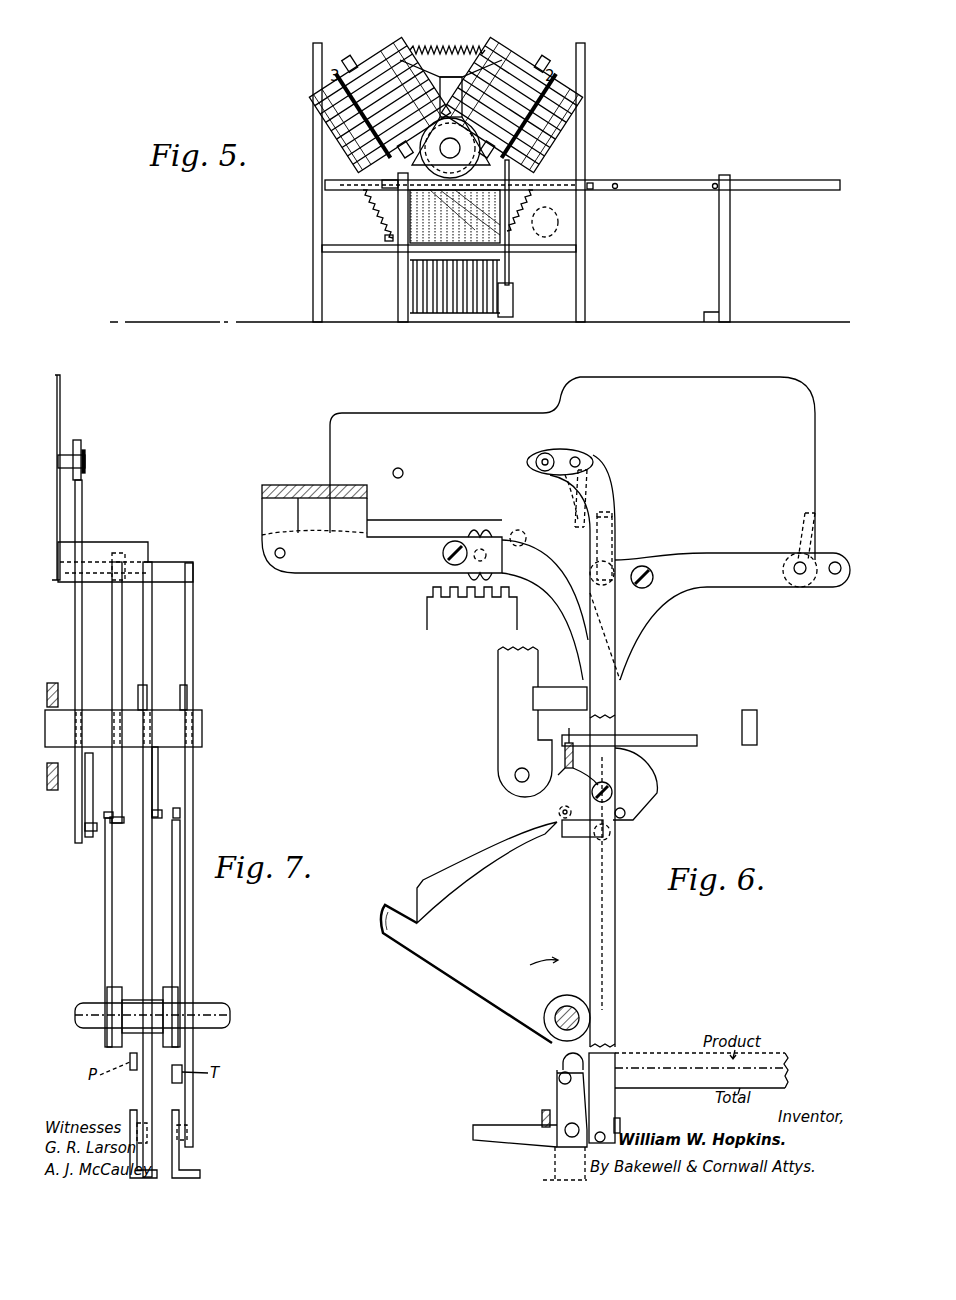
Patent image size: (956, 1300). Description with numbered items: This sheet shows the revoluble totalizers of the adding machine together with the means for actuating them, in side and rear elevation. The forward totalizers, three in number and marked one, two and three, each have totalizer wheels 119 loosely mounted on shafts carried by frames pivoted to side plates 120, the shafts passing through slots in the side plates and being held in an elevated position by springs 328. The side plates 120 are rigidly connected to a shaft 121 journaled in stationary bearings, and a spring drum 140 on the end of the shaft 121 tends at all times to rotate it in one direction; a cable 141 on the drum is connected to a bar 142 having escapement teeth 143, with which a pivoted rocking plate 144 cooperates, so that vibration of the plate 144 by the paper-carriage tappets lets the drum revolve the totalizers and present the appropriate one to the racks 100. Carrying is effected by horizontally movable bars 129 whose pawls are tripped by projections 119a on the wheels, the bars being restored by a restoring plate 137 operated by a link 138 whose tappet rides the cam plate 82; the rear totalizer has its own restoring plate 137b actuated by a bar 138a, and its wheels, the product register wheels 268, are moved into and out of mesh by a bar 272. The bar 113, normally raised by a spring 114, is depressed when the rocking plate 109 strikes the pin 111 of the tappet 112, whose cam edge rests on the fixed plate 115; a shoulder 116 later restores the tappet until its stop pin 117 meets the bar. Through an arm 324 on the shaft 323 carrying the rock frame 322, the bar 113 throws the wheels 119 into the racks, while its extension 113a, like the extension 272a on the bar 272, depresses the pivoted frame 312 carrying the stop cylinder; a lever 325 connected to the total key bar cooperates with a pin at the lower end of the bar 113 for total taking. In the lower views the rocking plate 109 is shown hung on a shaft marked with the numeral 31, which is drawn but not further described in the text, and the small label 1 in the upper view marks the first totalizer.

In FIG. 5, the totalizer 1 is at (545, 222).
In FIG. 7, the shaft 31 is at (232, 1019).
In FIG. 6, the shaft 31 is at (558, 1028).
In FIG. 7, the cam plate 82 is at (105, 931).
In FIG. 6, the cam plate 82 is at (443, 875).
In FIG. 5, the racks 100 is at (412, 307).
In FIG. 7, the rocking plate 109 is at (181, 951).
In FIG. 6, the rocking plate 109 is at (469, 932).
In FIG. 7, the pin 111 is at (181, 813).
In FIG. 6, the pin 111 is at (557, 813).
In FIG. 7, the tappet 112 is at (192, 776).
In FIG. 6, the tappet 112 is at (645, 788).
In FIG. 7, the bar 113 is at (194, 662).
In FIG. 6, the bar 113 is at (612, 605).
In FIG. 7, the extension 113a is at (188, 691).
In FIG. 6, the extension 113a is at (560, 698).
In FIG. 6, the spring 114 is at (565, 748).
In FIG. 6, the plate 115 is at (669, 736).
In FIG. 6, the shoulder 116 is at (555, 838).
In FIG. 6, the stop pin 117 is at (626, 818).
In FIG. 5, the totalizer wheels 119 is at (382, 66).
In FIG. 5, the tripping projections 119a is at (560, 118).
In FIG. 5, the side plates 120 is at (394, 52).
In FIG. 5, the shaft 121 is at (450, 148).
In FIG. 5, the bar 129 is at (455, 97).
In FIG. 6, the restoring plate 137 is at (795, 534).
In FIG. 6, the restoring plate 137b is at (571, 515).
In FIG. 7, the link 138 is at (118, 655).
In FIG. 6, the link 138 is at (732, 616).
In FIG. 6, the bar 138a is at (600, 494).
In FIG. 5, the spring drum 140 is at (450, 148).
In FIG. 5, the cable 141 is at (605, 180).
In FIG. 5, the bar 142 is at (676, 192).
In FIG. 5, the escapement teeth 143 is at (587, 194).
In FIG. 5, the rocking plate 144 is at (509, 268).
In FIG. 6, the product register wheels 268 is at (470, 530).
In FIG. 7, the bar 272 is at (150, 614).
In FIG. 6, the bar 272 is at (548, 582).
In FIG. 7, the extension 272a is at (143, 688).
In FIG. 7, the frame 312 is at (203, 731).
In FIG. 6, the frame 312 is at (543, 728).
In FIG. 6, the rock frame 322 is at (613, 530).
In FIG. 6, the shaft 323 is at (612, 563).
In FIG. 6, the arm 324 is at (645, 568).
In FIG. 6, the lever 325 is at (562, 1090).
In FIG. 5, the springs 328 is at (458, 46).